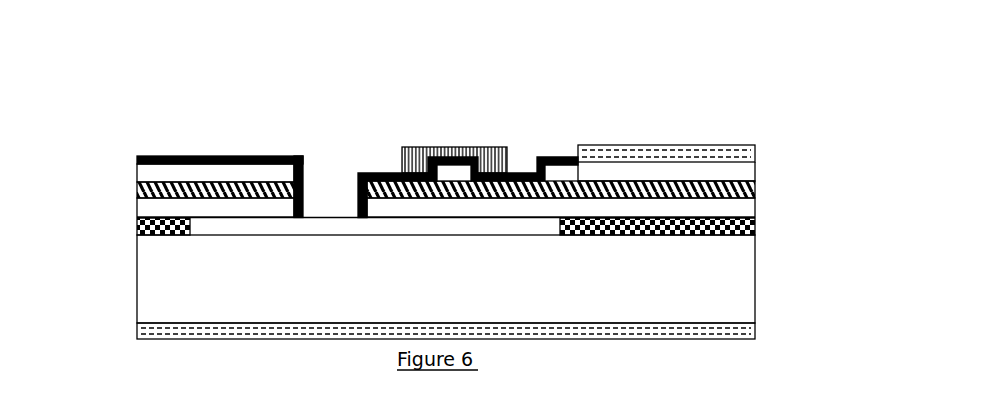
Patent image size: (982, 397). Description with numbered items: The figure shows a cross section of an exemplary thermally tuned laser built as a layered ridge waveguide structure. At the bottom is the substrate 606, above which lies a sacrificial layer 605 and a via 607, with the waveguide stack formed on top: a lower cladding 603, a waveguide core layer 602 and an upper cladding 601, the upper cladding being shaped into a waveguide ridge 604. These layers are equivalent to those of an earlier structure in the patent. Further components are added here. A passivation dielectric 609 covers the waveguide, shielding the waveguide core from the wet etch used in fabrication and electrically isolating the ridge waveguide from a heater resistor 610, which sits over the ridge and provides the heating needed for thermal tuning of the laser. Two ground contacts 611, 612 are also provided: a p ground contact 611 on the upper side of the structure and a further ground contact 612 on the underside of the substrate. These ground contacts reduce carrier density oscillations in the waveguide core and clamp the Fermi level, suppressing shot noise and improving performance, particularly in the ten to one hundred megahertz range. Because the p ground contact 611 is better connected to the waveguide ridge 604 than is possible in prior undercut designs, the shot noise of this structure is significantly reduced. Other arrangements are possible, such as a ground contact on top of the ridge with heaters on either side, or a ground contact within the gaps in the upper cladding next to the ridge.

The upper cladding 601 is at (137, 173).
The waveguide core layer 602 is at (137, 190).
The lower cladding 603 is at (137, 207).
The waveguide ridge 604 is at (462, 173).
The sacrificial layer 605 is at (137, 227).
The substrate 606 is at (137, 250).
The via 607 is at (349, 208).
The passivation dielectric 609 is at (360, 172).
The heater resistor 610 is at (420, 147).
The p ground contact 611 is at (755, 157).
The ground contact 612 is at (755, 332).